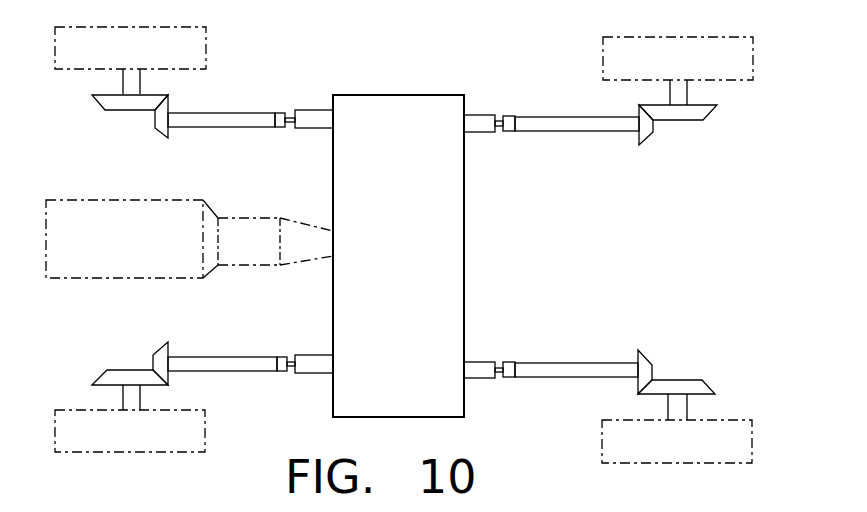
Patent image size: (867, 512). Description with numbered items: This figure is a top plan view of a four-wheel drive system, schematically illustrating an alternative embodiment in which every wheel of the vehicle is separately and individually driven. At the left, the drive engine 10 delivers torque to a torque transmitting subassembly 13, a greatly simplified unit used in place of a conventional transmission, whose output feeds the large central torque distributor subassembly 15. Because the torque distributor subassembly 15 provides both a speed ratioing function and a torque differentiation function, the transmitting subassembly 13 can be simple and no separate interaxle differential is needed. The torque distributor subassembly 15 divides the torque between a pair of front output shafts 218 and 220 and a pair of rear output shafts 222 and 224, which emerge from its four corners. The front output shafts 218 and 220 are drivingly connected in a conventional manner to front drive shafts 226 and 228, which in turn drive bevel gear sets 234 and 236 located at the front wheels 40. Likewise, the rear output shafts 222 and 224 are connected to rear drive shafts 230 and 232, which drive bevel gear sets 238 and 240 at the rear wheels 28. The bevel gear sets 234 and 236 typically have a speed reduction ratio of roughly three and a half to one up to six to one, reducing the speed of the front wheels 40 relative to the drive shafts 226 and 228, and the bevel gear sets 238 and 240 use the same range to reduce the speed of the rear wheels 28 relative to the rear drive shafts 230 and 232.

The drive engine 10 is at (89, 198).
The torque transmitting subassembly 13 is at (264, 216).
The torque distributor subassembly 15 is at (413, 93).
The rear wheels 28 is at (600, 42).
The front wheels 40 is at (207, 37).
The front output shaft 218 is at (315, 355).
The front output shaft 220 is at (310, 130).
The rear output shaft 222 is at (483, 115).
The rear output shaft 224 is at (480, 362).
The front drive shaft 226 is at (217, 357).
The front drive shaft 228 is at (217, 110).
The rear drive shaft 230 is at (570, 133).
The rear drive shaft 232 is at (550, 362).
The bevel gear set 234 is at (116, 366).
The bevel gear set 236 is at (116, 114).
The bevel gear set 238 is at (668, 124).
The bevel gear set 240 is at (671, 376).